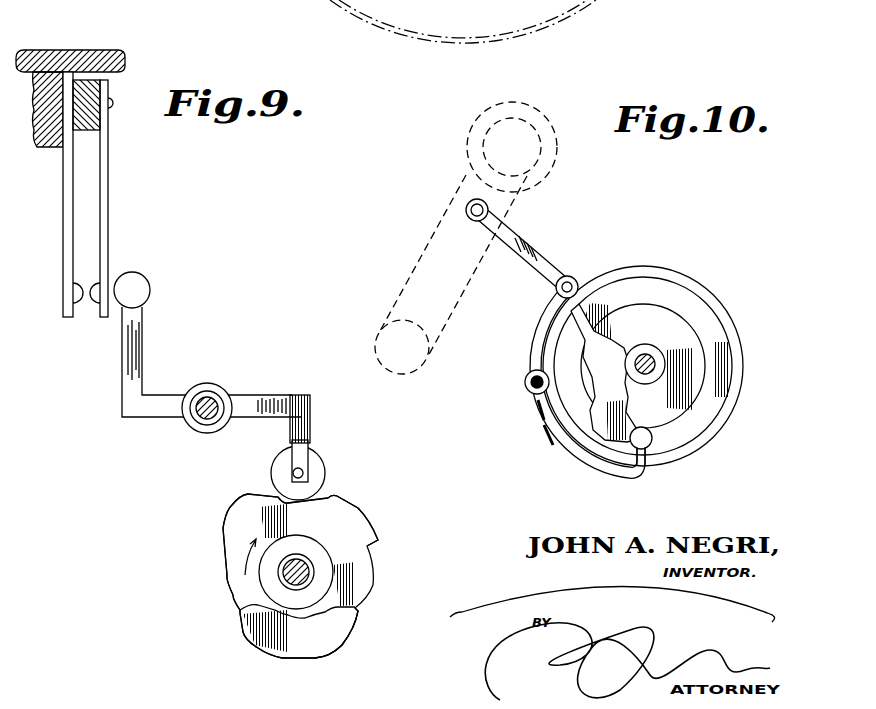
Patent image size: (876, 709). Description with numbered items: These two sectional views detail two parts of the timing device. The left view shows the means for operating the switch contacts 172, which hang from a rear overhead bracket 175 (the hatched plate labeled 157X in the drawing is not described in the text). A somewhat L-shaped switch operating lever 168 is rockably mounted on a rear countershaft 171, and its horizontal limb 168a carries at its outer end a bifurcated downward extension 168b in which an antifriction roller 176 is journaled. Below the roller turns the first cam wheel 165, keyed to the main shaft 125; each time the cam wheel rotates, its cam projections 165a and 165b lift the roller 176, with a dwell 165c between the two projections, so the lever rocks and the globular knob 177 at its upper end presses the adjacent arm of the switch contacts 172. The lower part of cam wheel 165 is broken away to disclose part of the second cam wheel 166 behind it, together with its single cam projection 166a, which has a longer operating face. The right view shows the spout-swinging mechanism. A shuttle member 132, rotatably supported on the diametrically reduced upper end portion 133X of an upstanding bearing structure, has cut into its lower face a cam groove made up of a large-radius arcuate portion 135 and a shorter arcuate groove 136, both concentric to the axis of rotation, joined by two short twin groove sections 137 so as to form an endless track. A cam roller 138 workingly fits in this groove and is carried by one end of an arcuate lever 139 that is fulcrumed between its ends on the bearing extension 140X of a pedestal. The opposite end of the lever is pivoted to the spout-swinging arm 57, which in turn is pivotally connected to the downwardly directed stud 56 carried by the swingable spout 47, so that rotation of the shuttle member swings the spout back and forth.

In FIG. 9, the mounting plate 157X is at (93, 52).
In FIG. 9, the rear overhead bracket 175 is at (46, 146).
In FIG. 9, the switch contacts 172 is at (112, 212).
In FIG. 9, the globular knob 177 is at (152, 283).
In FIG. 9, the switch operating lever 168 is at (122, 417).
In FIG. 9, the horizontal limb 168a is at (265, 393).
In FIG. 9, the bifurcated downward extension 168b is at (311, 420).
In FIG. 9, the rear countershaft 171 is at (200, 424).
In FIG. 9, the antifriction roller 176 is at (328, 467).
In FIG. 9, the cam wheel 165 is at (225, 570).
In FIG. 9, the cam projection 165a is at (370, 492).
In FIG. 9, the cam projection 165b is at (226, 525).
In FIG. 9, the dwell 165c is at (277, 492).
In FIG. 9, the main shaft 125 is at (308, 576).
In FIG. 9, the cam wheel 166 is at (240, 615).
In FIG. 9, the cam projection 166a is at (347, 645).
In FIG. 10, the swingable spout 47 is at (420, 257).
In FIG. 10, the stud 56 is at (468, 204).
In FIG. 10, the spout-swinging arm 57 is at (550, 263).
In FIG. 10, the arcuate lever 139 is at (532, 343).
In FIG. 10, the bearing extension 140X is at (528, 384).
In FIG. 10, the arcuate groove portion 135 is at (690, 297).
In FIG. 10, the reduced upper end portion 133X is at (653, 357).
In FIG. 10, the twin groove sections 137 is at (612, 332).
In FIG. 10, the shuttle member 132 is at (723, 425).
In FIG. 10, the shorter arcuate groove 136 is at (600, 377).
In FIG. 10, the cam roller 138 is at (667, 449).